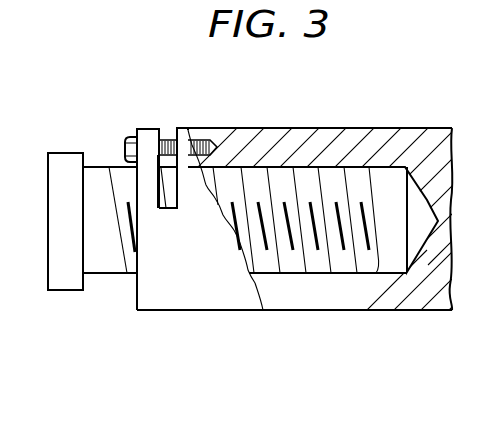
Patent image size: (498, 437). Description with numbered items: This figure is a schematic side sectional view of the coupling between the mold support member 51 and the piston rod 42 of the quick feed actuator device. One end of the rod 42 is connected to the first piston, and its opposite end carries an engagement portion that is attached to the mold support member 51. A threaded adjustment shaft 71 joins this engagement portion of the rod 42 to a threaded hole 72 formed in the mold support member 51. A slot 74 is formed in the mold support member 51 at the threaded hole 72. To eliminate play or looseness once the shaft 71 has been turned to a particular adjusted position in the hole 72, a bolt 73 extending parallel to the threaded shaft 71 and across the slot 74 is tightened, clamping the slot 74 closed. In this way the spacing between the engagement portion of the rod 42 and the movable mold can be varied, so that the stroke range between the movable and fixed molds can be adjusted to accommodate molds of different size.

The rod 42 is at (65, 162).
The mold support member 51 is at (402, 138).
The threaded adjustment shaft 71 is at (125, 242).
The threaded hole 72 is at (355, 268).
The bolt 73 is at (132, 138).
The slot 74 is at (172, 194).